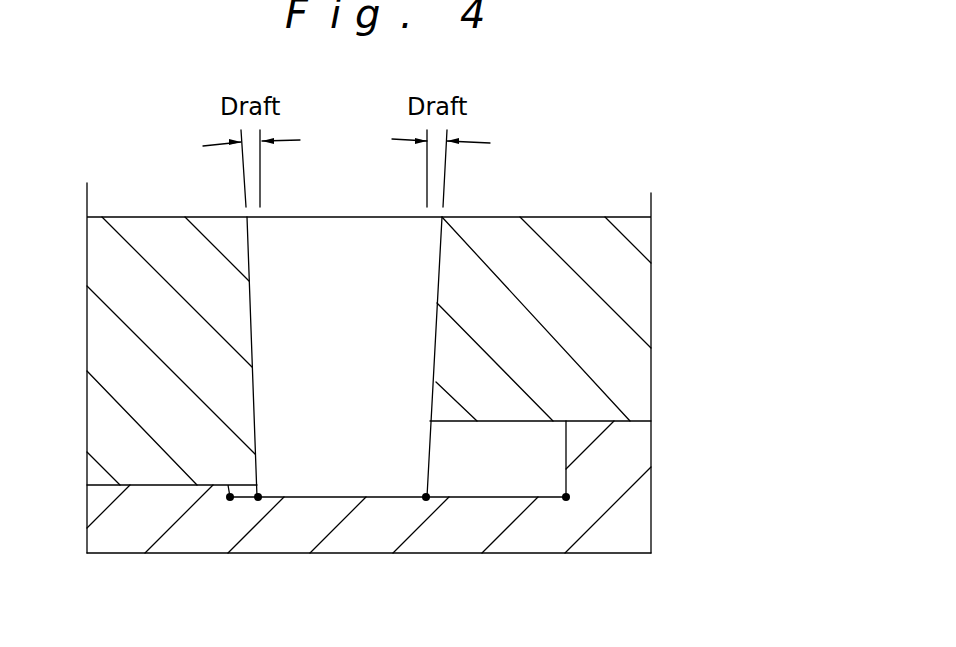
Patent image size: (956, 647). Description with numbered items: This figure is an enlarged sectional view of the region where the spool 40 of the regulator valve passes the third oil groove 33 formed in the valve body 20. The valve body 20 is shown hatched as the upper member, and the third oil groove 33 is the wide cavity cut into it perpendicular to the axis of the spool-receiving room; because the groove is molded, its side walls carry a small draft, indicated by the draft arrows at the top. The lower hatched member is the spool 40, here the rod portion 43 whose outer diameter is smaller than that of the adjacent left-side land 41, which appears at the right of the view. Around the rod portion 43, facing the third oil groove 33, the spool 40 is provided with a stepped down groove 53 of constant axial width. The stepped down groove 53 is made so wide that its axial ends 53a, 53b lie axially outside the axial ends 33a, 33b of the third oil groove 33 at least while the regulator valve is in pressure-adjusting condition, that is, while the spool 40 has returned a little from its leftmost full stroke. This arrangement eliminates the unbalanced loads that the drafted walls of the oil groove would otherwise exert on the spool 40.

The valve body 20 is at (642, 362).
The third oil groove 33 is at (365, 361).
The axial end of the third oil groove 33a is at (258, 497).
The axial end of the third oil groove 33b is at (426, 497).
The spool 40 is at (638, 460).
The left-side land 41 is at (624, 419).
The rod portion 43 is at (136, 487).
The stepped down groove 53 is at (518, 471).
The axial end of the stepped down groove 53a is at (230, 497).
The axial end of the stepped down groove 53b is at (566, 497).